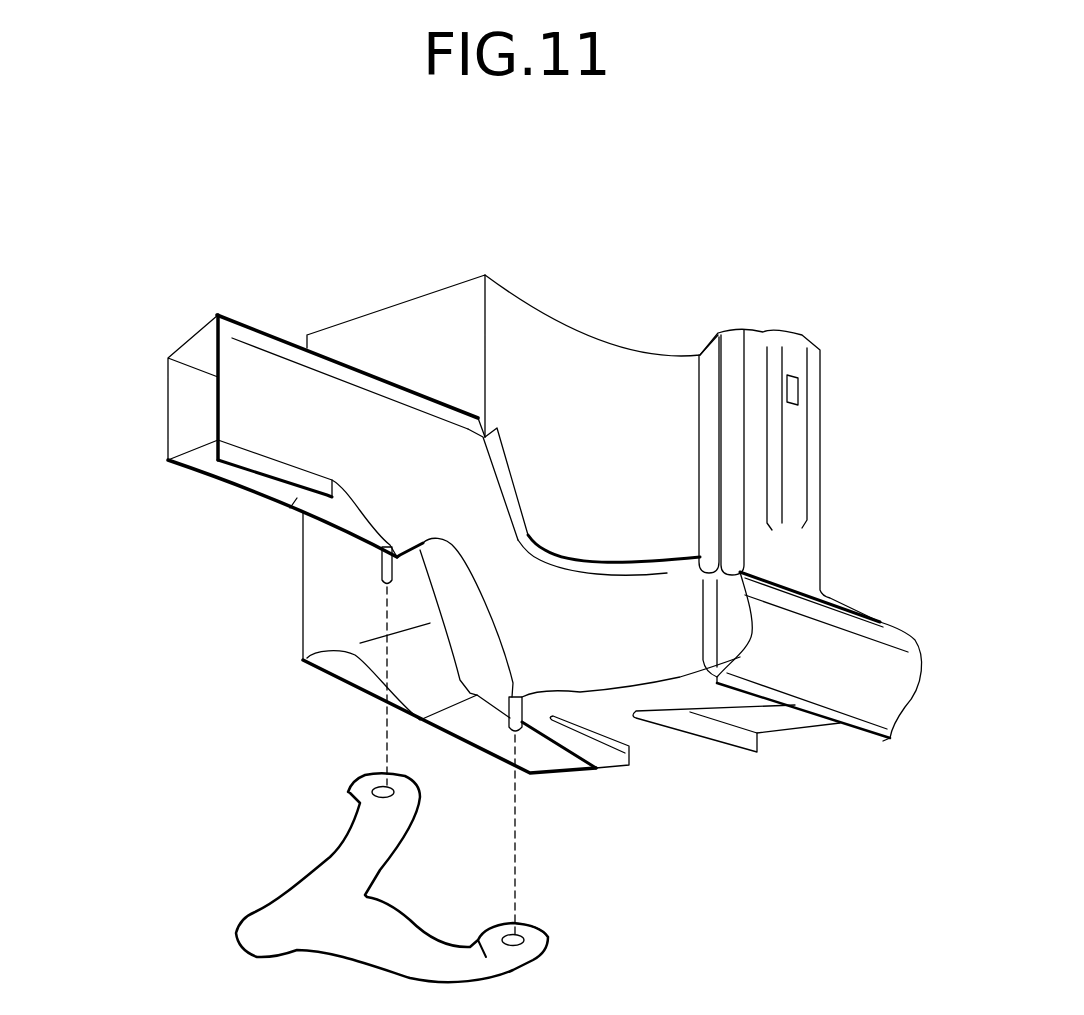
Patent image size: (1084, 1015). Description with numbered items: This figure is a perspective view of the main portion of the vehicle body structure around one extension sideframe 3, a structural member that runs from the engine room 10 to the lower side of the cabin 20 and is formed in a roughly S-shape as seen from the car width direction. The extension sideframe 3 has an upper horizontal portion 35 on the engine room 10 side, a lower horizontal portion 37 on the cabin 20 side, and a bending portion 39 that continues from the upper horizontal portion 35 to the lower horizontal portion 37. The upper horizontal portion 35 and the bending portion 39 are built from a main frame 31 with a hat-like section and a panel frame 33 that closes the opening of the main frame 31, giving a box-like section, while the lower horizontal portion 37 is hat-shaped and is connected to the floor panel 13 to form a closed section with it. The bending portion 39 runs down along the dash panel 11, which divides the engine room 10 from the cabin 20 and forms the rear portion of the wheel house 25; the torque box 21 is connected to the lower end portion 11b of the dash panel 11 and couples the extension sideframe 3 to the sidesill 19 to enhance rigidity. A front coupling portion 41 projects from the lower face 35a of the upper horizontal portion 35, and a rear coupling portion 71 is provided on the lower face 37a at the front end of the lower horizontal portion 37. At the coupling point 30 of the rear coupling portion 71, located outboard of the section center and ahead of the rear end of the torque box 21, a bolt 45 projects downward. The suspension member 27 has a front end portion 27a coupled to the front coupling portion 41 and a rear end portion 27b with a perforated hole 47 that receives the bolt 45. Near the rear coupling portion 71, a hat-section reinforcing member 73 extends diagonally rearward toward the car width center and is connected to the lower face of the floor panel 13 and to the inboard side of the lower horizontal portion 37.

The extension sideframe 3 is at (180, 347).
The engine room 10 is at (300, 257).
The dash panel 11 is at (450, 307).
The both end lower portion of the dash panel 11b is at (653, 545).
The floor panel 13 is at (790, 722).
The sidesill 19 is at (880, 620).
The cabin 20 is at (896, 441).
The torque box 21 is at (608, 597).
The wheel house 25 is at (560, 421).
The suspension member 27 is at (252, 913).
The front end portion of the suspension member 27a is at (348, 792).
The rear end portion of the suspension member 27b is at (548, 950).
The coupling point 30 is at (510, 690).
The main frame 31 is at (167, 406).
The panel frame 33 is at (270, 377).
The upper horizontal portion 35 is at (213, 478).
The lower face of the upper horizontal portion 35a is at (297, 498).
The lower horizontal portion 37 is at (663, 745).
The lower face of the lower horizontal portion 37a is at (463, 680).
The bending portion 39 is at (447, 647).
The front coupling portion 41 is at (373, 538).
The bolt 45 is at (500, 713).
The perforated hole 47 is at (535, 928).
The rear coupling portion 71 is at (562, 703).
The reinforcing member 73 is at (553, 740).